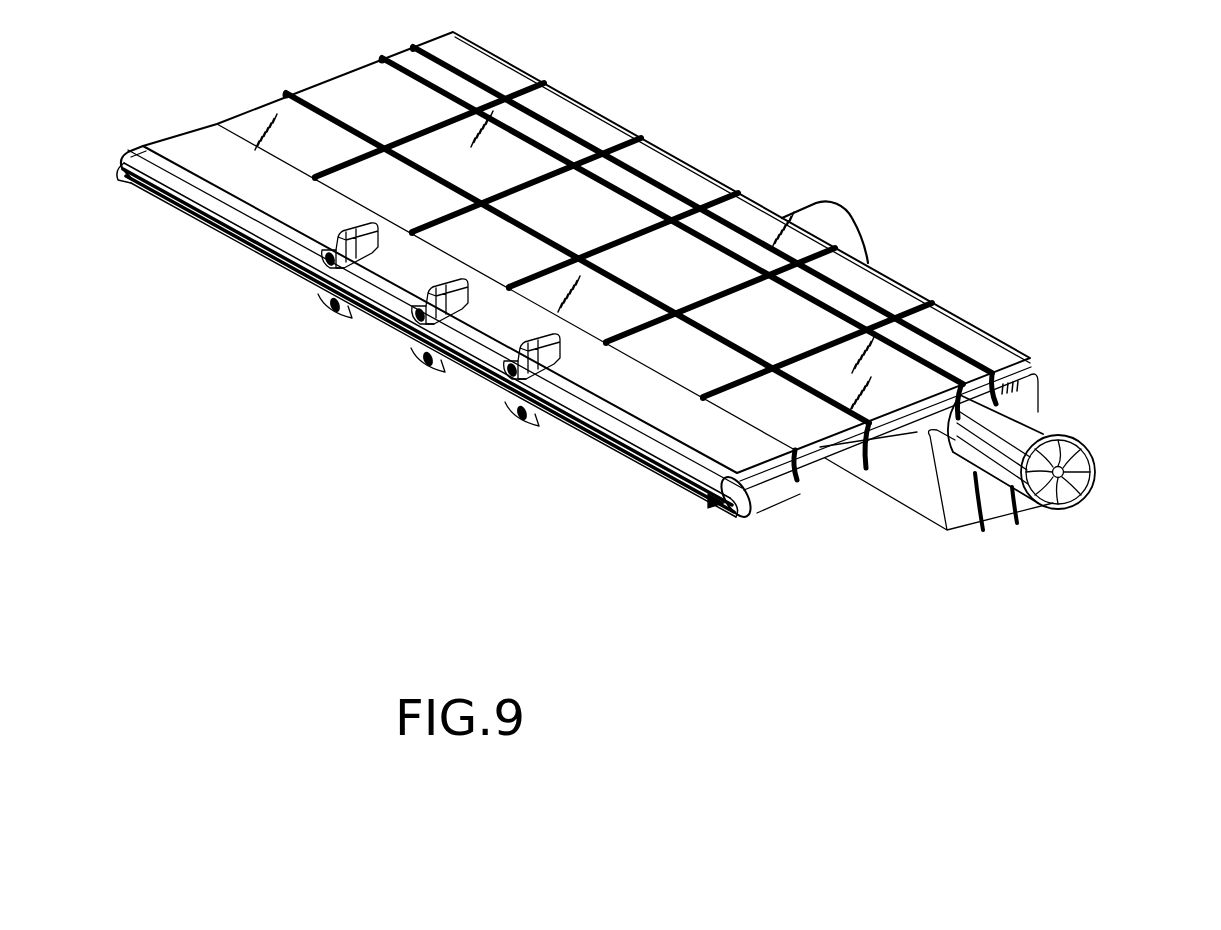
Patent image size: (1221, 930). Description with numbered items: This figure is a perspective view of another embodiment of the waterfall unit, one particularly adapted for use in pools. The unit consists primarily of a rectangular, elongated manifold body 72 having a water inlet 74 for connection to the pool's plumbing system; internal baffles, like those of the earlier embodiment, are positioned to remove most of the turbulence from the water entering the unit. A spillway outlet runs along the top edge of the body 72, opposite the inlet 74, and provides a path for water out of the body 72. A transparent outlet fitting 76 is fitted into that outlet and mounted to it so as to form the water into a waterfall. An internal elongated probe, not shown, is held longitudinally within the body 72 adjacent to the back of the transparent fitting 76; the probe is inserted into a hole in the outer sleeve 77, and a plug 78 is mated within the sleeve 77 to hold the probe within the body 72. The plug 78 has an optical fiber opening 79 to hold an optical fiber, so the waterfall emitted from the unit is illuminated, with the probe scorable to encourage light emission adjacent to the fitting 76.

The manifold body 72 is at (995, 333).
The water inlet 74 is at (868, 246).
The transparent outlet fitting 76 is at (732, 518).
The outer sleeve 77 is at (1028, 423).
The plug 78 is at (1082, 471).
The optical fiber opening 79 is at (1061, 480).